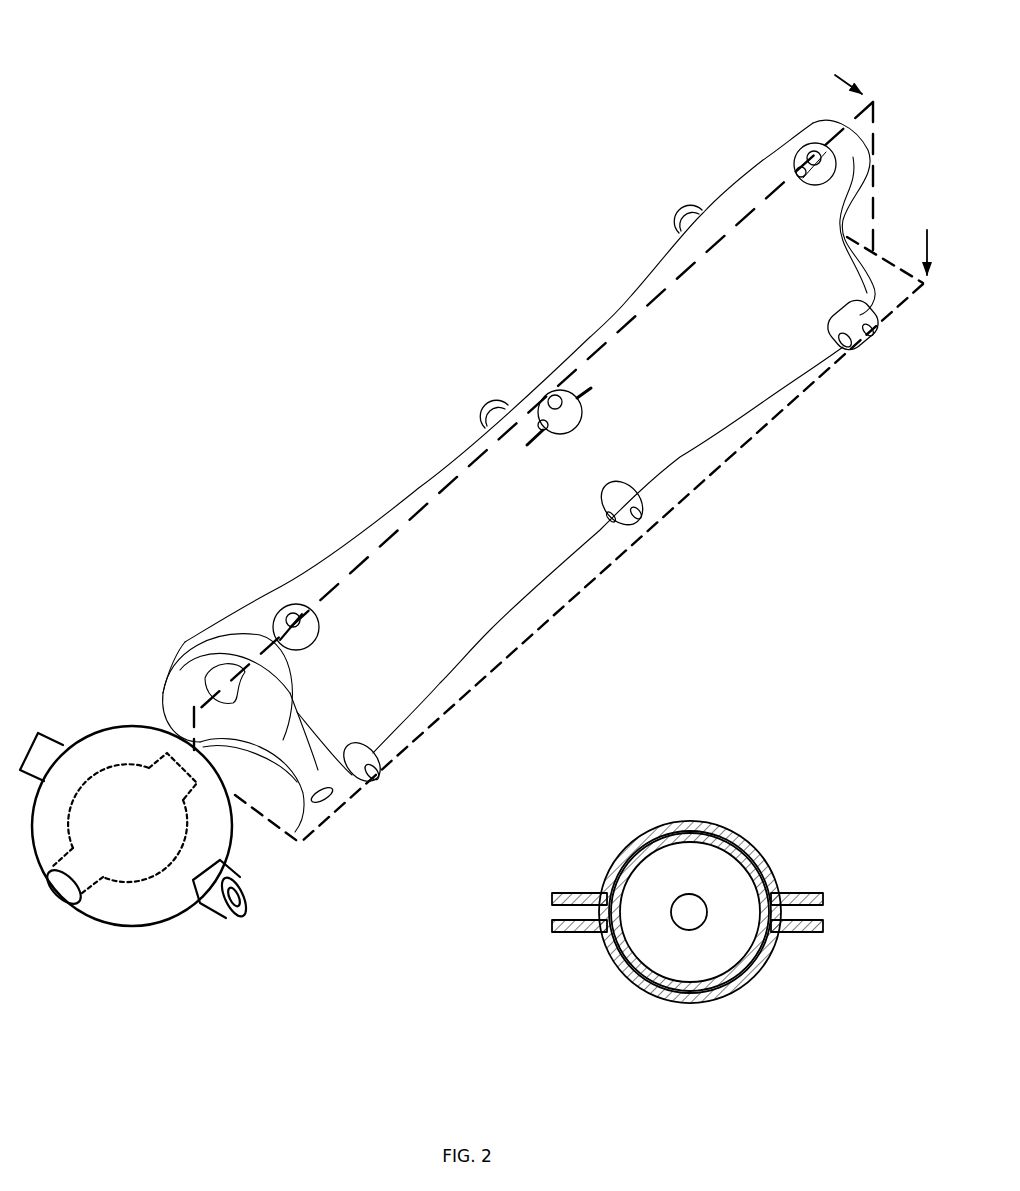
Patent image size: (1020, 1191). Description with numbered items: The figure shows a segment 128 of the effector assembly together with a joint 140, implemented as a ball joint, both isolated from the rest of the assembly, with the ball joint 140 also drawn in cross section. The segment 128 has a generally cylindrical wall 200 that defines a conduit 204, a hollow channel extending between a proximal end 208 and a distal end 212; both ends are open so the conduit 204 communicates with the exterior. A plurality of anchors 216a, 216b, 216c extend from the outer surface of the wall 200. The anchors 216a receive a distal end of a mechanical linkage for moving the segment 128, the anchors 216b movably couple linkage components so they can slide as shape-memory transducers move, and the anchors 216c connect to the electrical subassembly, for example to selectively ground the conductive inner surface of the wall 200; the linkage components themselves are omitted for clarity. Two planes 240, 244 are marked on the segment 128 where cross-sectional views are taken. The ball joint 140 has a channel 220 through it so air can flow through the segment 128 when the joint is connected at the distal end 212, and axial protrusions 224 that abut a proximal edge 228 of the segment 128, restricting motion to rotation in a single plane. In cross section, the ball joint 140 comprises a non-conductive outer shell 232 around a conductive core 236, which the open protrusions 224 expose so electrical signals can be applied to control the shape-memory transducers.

The segment 128 is at (530, 383).
The ball joint 140 is at (128, 928).
The cylindrical wall 200 is at (543, 583).
The conduit 204 is at (272, 695).
The proximal end 208 is at (813, 118).
The distal end 212 is at (325, 848).
The anchors 216a is at (190, 637).
The anchors 216b is at (793, 165).
The anchors 216c is at (487, 410).
The channel 220 is at (65, 890).
The axial protrusions 224 is at (38, 736).
The proximal edge 228 is at (320, 795).
The non-conductive outer shell 232 is at (730, 997).
The conductive core 236 is at (692, 978).
The plane 240 is at (393, 530).
The plane 244 is at (620, 557).